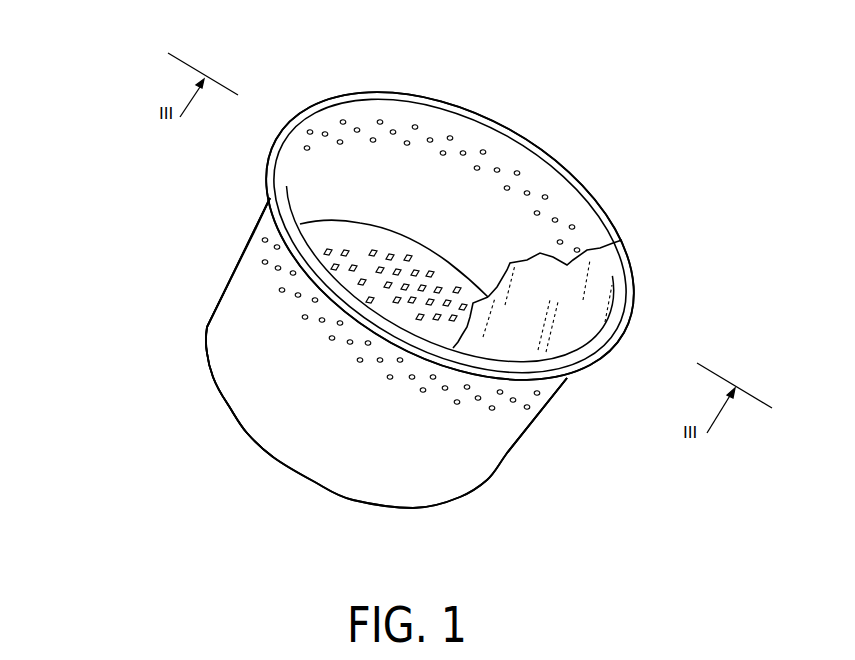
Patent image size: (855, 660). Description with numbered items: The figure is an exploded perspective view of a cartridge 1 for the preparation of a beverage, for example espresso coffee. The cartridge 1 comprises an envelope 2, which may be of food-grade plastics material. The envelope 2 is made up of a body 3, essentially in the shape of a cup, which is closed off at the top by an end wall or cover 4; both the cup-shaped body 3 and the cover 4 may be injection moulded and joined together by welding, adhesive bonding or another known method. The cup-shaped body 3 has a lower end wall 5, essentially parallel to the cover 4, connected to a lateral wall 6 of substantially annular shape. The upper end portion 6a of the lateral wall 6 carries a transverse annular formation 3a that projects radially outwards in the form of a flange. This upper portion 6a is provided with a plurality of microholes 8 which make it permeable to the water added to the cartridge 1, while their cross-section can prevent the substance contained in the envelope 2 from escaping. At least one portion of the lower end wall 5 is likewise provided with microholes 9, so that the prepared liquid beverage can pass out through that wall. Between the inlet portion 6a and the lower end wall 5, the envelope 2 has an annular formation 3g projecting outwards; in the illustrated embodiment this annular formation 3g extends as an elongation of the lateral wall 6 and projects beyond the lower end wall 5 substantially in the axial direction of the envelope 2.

The cartridge 1 is at (630, 190).
The envelope 2 is at (201, 330).
The body 3 is at (482, 470).
The transverse annular formation 3a is at (313, 110).
The annular formation 3g is at (260, 450).
The cover 4 is at (598, 276).
The lower end wall 5 is at (443, 273).
The lateral wall 6 is at (231, 281).
The upper end portion 6a is at (262, 216).
The microholes 8 is at (527, 192).
The microholes 9 is at (408, 256).